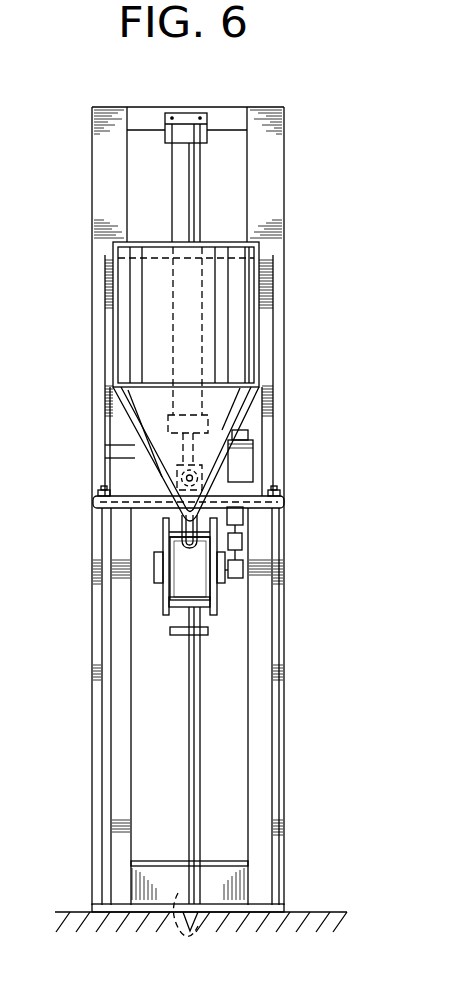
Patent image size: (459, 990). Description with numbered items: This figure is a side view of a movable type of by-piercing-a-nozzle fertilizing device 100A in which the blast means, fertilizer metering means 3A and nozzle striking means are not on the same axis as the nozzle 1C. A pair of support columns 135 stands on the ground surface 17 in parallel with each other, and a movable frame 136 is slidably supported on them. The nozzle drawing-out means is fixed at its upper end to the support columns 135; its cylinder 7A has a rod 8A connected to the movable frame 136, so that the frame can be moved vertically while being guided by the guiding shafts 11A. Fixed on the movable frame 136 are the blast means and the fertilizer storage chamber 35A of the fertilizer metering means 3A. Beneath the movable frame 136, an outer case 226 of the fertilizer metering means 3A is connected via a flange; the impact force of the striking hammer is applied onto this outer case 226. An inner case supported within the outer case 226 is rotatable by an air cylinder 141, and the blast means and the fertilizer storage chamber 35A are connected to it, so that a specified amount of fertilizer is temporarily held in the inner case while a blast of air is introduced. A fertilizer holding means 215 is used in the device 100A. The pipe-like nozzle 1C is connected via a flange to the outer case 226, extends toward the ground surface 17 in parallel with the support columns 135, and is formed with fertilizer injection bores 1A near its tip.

The movable type of by-piercing-a-nozzle fertilizing device 100A is at (415, 433).
The support columns 135 is at (110, 143).
The cylinder 7A is at (186, 190).
The fertilizer storage chamber 35A is at (148, 325).
The fertilizer metering means 3A is at (263, 362).
The rod 8A is at (168, 452).
The air cylinder 141 is at (240, 481).
The movable frame 136 is at (117, 480).
The fertilizer holding means 215 is at (228, 600).
The outer case 226 is at (183, 577).
The guiding shafts 11A is at (102, 692).
The nozzle 1C is at (190, 778).
The ground surface 17 is at (322, 912).
The fertilizer injection bores 1A is at (184, 930).